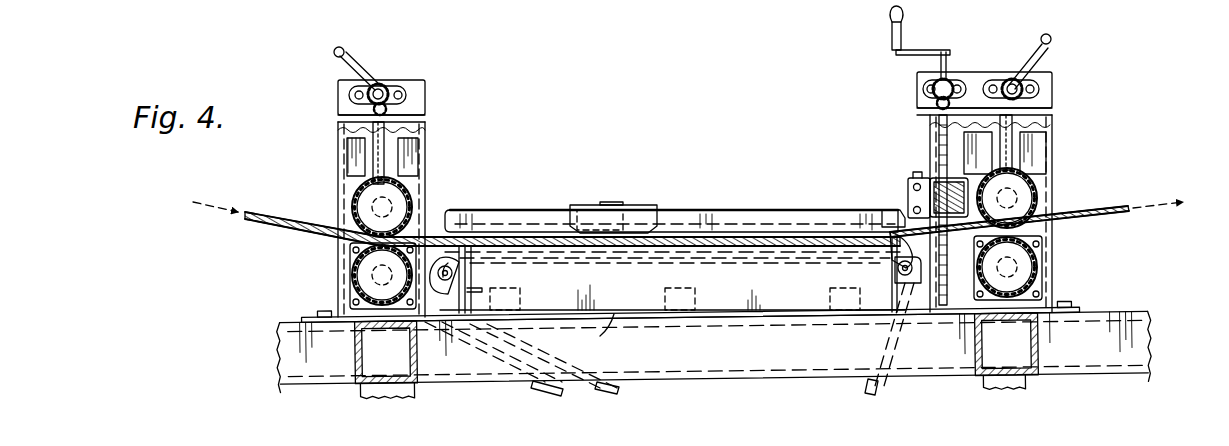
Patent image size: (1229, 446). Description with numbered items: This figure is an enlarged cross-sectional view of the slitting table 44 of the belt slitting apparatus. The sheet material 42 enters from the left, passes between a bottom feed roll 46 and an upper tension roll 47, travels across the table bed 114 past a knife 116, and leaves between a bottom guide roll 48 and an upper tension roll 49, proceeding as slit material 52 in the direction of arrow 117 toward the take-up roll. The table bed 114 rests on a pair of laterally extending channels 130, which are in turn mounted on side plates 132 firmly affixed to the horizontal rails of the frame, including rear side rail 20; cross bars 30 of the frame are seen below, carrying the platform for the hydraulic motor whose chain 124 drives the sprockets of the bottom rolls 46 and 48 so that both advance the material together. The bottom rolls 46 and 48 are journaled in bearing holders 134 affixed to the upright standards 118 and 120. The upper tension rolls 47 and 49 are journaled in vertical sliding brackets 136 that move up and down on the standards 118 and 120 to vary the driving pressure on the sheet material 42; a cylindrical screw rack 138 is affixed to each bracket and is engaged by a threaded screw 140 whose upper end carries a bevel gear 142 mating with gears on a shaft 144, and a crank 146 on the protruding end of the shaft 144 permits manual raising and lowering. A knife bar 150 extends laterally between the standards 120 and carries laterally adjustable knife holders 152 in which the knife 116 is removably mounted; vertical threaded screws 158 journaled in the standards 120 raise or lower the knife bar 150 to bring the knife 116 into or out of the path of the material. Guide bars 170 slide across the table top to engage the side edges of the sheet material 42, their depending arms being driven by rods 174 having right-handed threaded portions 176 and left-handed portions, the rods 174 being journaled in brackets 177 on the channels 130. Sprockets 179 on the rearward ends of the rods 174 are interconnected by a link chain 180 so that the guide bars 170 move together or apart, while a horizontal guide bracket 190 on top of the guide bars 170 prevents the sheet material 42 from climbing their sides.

The rear side rail 20 is at (1100, 322).
The cross bar 30 is at (354, 352).
The sheet material 42 is at (256, 210).
The slitting table 44 is at (646, 125).
The bottom feed roll 46 is at (353, 266).
The upper tension roll 47 is at (413, 190).
The bottom guide roll 48 is at (1036, 259).
The upper tension roll 49 is at (1041, 189).
The exit workpiece strip 52 is at (1109, 206).
The table bed 114 is at (736, 212).
The knife 116 is at (906, 218).
The arrow 117 is at (1157, 205).
The upright frame member 118 is at (339, 90).
The upright frame member 120 is at (1059, 88).
The chain 124 is at (531, 388).
The laterally extending channel 130 is at (482, 283).
The side plate 132 is at (620, 294).
The bearing holder 134 is at (354, 300).
The vertical sliding bracket 136 is at (422, 166).
The adjusting screw 138 is at (394, 141).
The threaded screw 140 is at (340, 138).
The bevel gear 142 is at (409, 100).
The shaft 144 is at (393, 74).
The crank 146 is at (350, 61).
The knife bar 150 is at (940, 187).
The knife holder 152 is at (911, 183).
The threaded screw 158 is at (940, 134).
The guide bar 170 is at (681, 208).
The rod 174 is at (521, 355).
The right-handed threaded portion 176 is at (446, 232).
The bracket 177 is at (481, 242).
The sprocket 179 is at (880, 305).
The link chain 180 is at (615, 388).
The horizontal guide bracket 190 is at (633, 204).